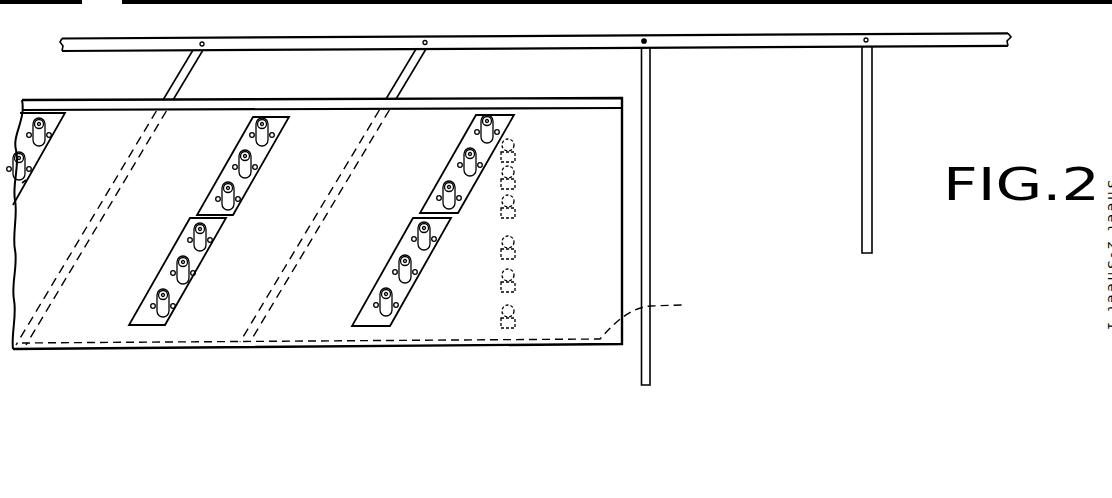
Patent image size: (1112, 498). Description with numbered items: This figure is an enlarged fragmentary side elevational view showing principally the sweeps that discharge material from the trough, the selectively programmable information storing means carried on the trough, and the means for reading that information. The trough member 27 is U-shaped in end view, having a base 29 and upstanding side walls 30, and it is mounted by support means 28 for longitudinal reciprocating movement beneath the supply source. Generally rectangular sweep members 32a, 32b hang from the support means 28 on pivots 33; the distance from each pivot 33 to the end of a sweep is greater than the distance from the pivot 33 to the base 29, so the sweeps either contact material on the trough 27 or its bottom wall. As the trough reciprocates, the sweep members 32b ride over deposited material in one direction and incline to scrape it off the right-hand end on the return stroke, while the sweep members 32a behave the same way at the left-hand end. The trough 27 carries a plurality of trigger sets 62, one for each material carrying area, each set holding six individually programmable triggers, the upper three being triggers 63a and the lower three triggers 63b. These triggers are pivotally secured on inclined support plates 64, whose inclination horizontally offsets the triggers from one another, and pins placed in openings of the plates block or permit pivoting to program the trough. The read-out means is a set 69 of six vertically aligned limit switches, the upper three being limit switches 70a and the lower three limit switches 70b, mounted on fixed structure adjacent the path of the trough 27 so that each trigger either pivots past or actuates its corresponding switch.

The trough member 27 is at (622, 218).
The support means 28 is at (149, 35).
The base 29 is at (369, 319).
The side walls 30 is at (590, 254).
The sweep members 32a is at (177, 78).
The sweep members 32b is at (641, 70).
The pivots 33 is at (206, 42).
The trigger sets 62 is at (56, 131).
The triggers 63a is at (254, 119).
The triggers 63b is at (190, 228).
The inclined support plates 64 is at (27, 181).
The set of limit switches 69 is at (548, 229).
The limit switches 70a is at (516, 210).
The limit switches 70b is at (516, 255).